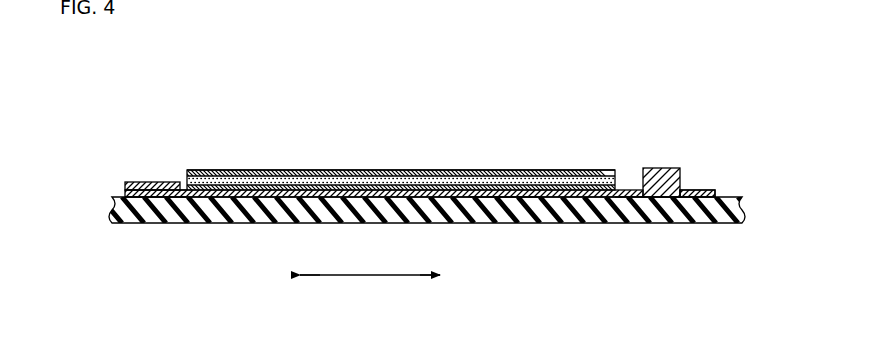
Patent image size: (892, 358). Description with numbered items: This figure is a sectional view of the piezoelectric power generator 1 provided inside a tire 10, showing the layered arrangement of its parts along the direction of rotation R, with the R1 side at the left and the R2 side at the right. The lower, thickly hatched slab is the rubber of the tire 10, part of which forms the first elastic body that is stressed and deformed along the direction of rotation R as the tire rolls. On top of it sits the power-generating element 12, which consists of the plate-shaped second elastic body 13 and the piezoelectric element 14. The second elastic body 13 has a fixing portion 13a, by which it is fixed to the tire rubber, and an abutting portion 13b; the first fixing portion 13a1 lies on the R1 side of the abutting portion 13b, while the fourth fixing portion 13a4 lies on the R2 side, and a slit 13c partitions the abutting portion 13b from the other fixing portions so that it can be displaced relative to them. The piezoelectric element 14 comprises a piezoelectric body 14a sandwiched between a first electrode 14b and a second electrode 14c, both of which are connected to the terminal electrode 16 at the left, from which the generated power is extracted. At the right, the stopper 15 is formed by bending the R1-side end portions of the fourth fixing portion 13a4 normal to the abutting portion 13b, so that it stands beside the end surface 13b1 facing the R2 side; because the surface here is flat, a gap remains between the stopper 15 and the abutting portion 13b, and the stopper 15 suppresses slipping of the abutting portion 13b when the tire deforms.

The piezoelectric power generator 1 is at (460, 125).
The tire 10 is at (190, 223).
The power-generating element 12 is at (385, 150).
The second elastic body 13 is at (551, 197).
The fixing portion 13a is at (170, 190).
The first fixing portion 13a1 is at (158, 196).
The fourth fixing portion 13a4 is at (697, 190).
The abutting portion 13b is at (504, 197).
The end surface 13b1 is at (655, 197).
The slit 13c is at (641, 197).
The piezoelectric element 14 is at (401, 122).
The piezoelectric body 14a is at (226, 186).
The first electrode 14b is at (277, 173).
The second electrode 14c is at (256, 180).
The stopper 15 is at (663, 168).
The terminal electrode 16 is at (157, 182).
The direction of rotation R is at (363, 276).
The R1-side R1 is at (296, 275).
The R2-side R2 is at (445, 275).